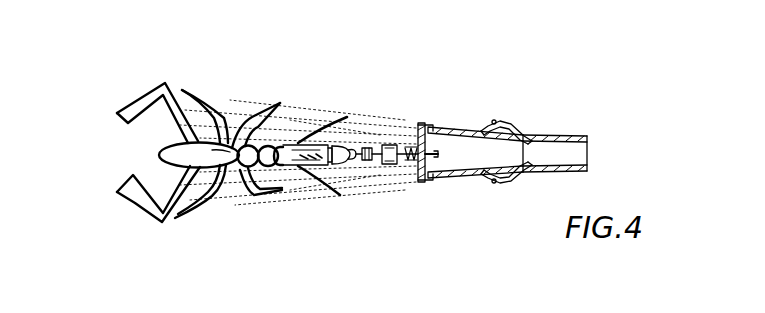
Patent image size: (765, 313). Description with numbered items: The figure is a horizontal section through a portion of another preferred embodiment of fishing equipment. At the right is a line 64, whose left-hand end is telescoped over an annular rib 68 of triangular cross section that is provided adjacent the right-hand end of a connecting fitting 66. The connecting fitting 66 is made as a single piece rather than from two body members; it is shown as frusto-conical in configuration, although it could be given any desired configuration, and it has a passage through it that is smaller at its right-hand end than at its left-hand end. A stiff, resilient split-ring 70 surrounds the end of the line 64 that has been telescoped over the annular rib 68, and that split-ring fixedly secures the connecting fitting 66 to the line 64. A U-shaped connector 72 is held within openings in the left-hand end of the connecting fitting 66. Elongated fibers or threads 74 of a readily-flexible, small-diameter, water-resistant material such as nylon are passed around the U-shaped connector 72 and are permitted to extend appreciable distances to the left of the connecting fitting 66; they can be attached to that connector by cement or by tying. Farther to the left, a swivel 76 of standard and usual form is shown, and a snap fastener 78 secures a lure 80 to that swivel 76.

The line 64 is at (568, 136).
The connecting fitting 66 is at (472, 128).
The annular rib 68 is at (508, 125).
The split-ring 70 is at (497, 179).
The U-shaped connector 72 is at (433, 135).
The fibers or threads 74 is at (350, 172).
The swivel 76 is at (392, 146).
The snap fastener 78 is at (315, 158).
The lure 80 is at (178, 142).